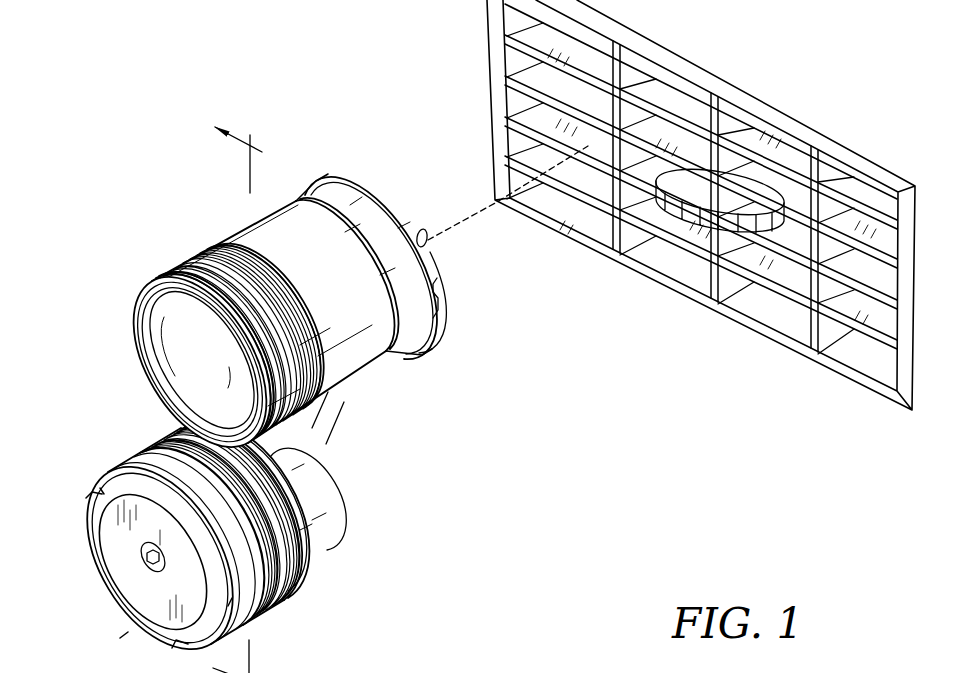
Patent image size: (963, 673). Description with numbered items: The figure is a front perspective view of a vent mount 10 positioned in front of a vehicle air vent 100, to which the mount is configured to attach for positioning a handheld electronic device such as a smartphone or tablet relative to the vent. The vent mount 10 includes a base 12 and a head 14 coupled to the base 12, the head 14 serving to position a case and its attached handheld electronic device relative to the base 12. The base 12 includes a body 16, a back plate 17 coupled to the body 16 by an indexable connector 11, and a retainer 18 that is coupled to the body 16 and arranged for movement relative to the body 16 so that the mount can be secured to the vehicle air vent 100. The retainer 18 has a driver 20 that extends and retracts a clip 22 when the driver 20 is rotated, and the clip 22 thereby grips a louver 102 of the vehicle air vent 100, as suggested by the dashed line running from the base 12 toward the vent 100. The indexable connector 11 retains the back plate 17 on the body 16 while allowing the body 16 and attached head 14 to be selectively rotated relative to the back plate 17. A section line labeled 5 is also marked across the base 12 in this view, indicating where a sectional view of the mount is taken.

The vent mount 10 is at (135, 103).
The base 12 is at (277, 238).
The head 14 is at (320, 563).
The body 16 is at (333, 342).
The back plate 17 is at (420, 271).
The retainer 18 is at (345, 295).
The driver 20 is at (170, 260).
The clip 22 is at (419, 227).
The indexable connector 11 is at (334, 204).
The section line 5- 5 is at (242, 397).
The vehicle air vent 100 is at (798, 72).
The louver 102 is at (634, 166).